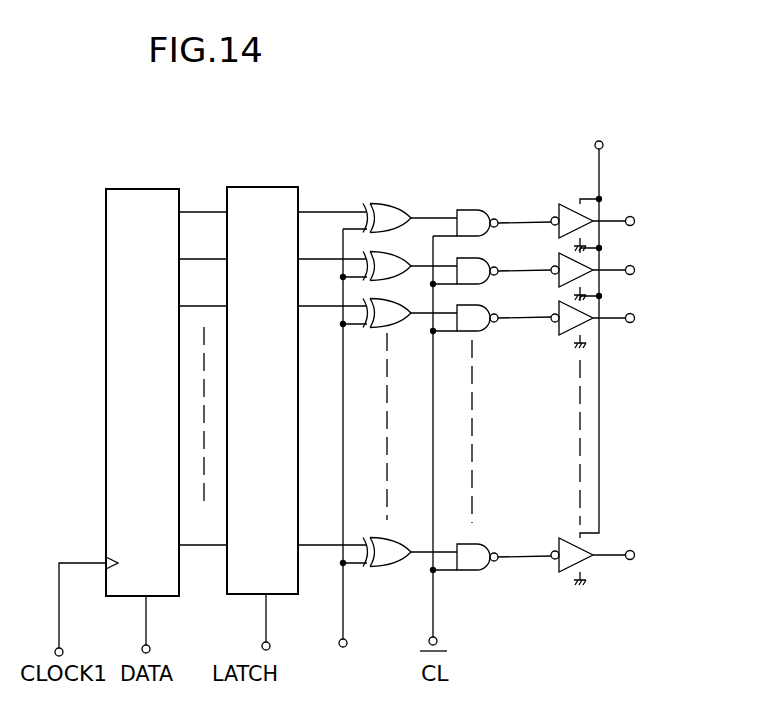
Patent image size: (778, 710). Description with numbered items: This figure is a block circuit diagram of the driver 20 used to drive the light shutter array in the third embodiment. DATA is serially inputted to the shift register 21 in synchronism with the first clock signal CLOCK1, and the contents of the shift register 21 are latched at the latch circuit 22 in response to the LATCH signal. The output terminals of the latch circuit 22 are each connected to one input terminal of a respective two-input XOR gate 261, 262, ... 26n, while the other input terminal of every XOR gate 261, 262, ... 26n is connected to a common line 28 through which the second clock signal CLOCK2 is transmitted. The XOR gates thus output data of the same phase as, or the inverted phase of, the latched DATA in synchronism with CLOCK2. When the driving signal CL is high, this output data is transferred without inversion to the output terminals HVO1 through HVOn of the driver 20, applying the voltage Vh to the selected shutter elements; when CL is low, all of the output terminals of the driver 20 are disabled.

The driver 20 is at (523, 180).
The shift register 21 is at (151, 189).
The latch circuit 22 is at (268, 187).
The two-input XOR gate 261 is at (385, 204).
The two-input XOR gate 262 is at (403, 262).
The two-input XOR gate 26n is at (384, 567).
The common line 28 is at (343, 386).